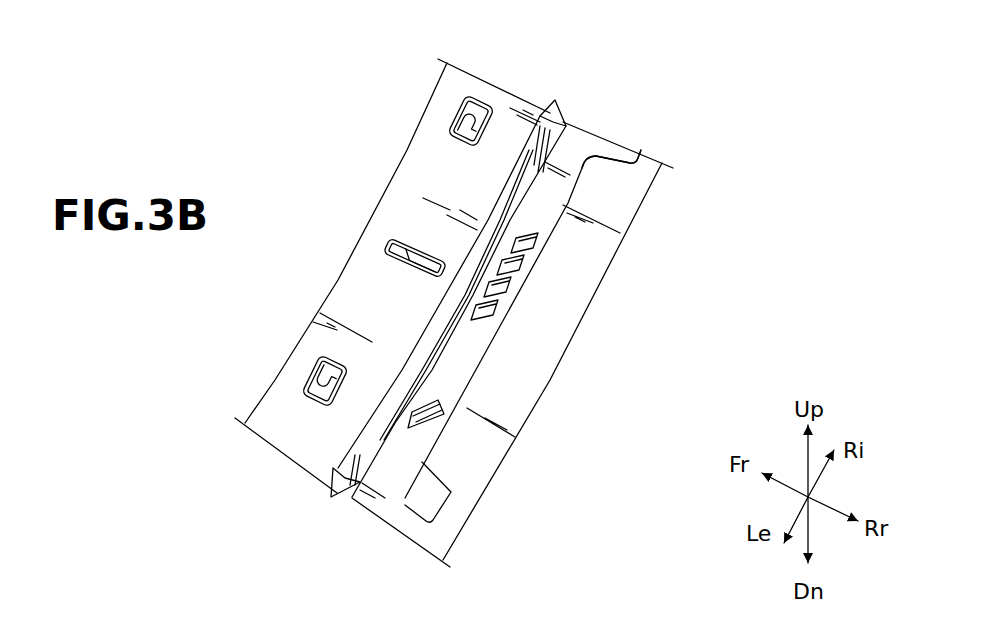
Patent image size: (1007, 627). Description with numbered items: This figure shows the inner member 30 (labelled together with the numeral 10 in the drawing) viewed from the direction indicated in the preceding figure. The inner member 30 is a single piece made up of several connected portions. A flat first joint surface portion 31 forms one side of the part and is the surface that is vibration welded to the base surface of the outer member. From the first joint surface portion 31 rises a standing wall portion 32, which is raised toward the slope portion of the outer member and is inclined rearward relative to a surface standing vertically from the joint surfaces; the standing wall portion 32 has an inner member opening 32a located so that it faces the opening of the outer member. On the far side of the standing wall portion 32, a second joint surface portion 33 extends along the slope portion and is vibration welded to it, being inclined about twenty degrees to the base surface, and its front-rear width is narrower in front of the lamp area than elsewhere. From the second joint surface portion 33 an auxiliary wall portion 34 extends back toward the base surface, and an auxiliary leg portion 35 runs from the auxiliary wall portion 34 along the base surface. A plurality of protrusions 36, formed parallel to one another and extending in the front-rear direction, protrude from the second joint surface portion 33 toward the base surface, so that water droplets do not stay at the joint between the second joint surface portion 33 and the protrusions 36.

The vehicle seat frame member 10 is at (454, 305).
The inner member 30 is at (278, 118).
The first joint surface portion 31 is at (430, 178).
The standing wall portion 32 is at (555, 124).
The inner member opening 32a is at (385, 413).
The second joint surface portion 33 is at (550, 187).
The auxiliary wall portion 34 is at (430, 490).
The auxiliary leg portion 35 is at (535, 355).
The protrusions 36 is at (537, 240).